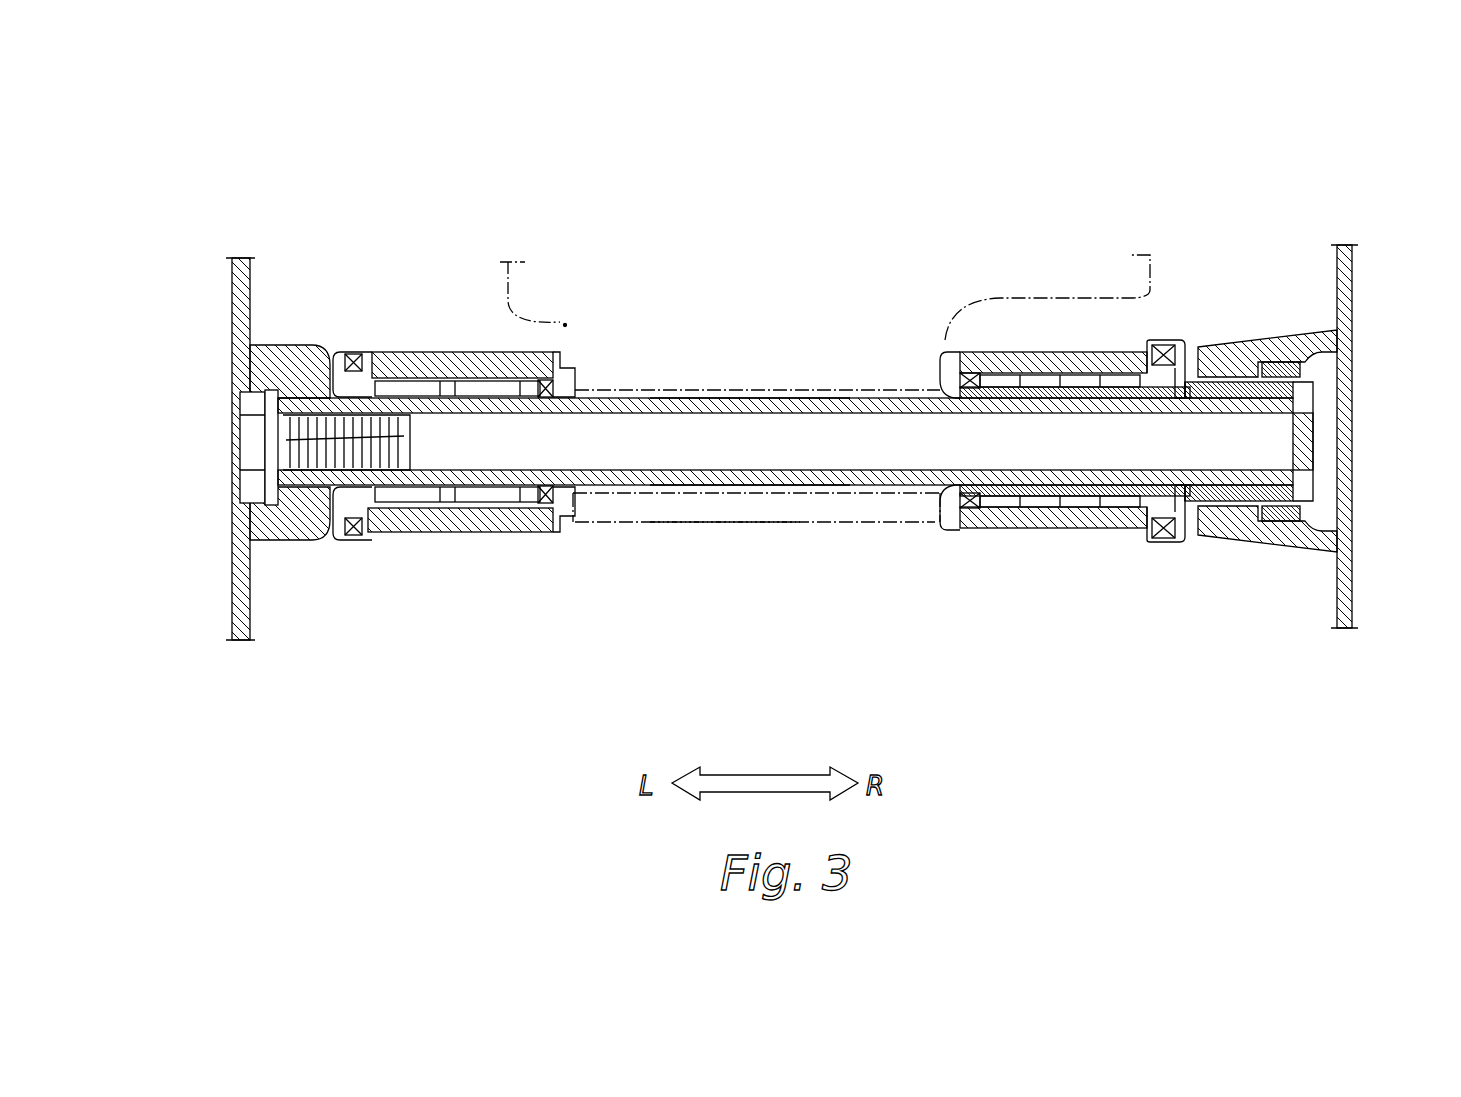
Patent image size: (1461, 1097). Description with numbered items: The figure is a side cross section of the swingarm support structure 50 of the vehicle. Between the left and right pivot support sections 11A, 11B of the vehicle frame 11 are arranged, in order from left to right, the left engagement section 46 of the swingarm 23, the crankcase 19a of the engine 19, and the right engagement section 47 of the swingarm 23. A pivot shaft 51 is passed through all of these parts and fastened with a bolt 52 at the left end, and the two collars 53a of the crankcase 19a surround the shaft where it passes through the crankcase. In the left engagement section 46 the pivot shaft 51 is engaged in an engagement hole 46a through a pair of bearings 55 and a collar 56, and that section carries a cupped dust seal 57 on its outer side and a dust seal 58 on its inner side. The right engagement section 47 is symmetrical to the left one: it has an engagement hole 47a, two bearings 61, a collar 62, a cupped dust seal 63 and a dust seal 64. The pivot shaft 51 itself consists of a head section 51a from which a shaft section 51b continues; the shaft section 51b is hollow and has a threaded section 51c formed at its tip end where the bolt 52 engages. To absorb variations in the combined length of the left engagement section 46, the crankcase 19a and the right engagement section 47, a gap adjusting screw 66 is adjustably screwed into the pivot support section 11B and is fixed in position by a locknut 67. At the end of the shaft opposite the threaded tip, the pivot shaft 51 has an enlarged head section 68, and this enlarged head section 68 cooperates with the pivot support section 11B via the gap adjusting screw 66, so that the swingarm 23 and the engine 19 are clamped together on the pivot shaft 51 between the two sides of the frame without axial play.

The swingarm support structure 50 is at (338, 122).
The vehicle frame 11 is at (258, 262).
The left pivot support section 11A is at (250, 510).
The right pivot support section 11B is at (1335, 372).
The swingarm 23 is at (452, 308).
The left engagement section 46 is at (403, 345).
The engagement hole 46a is at (503, 330).
The right engagement section 47 is at (1048, 340).
The engagement hole 47a is at (1095, 378).
The pivot shaft 51 is at (1332, 460).
The head section 51a is at (1308, 430).
The shaft section 51b is at (748, 400).
The axle threaded portion 51c is at (325, 430).
The bolt 52 is at (245, 405).
The collar 53a is at (565, 535).
The bearing 55 is at (425, 510).
The collar 56 is at (390, 525).
The cupped dust seal 57 is at (345, 545).
The dust seal 58 is at (568, 330).
The bearing 61 is at (1030, 525).
The collar 62 is at (1140, 528).
The cupped dust seal 63 is at (1195, 540).
The dust seal 64 is at (945, 380).
The gap adjusting screw 66 is at (1240, 525).
The locknut 67 is at (1300, 530).
The enlarged head section 68 is at (1290, 500).
The engine 19 is at (795, 548).
The crankcase 19a is at (720, 522).